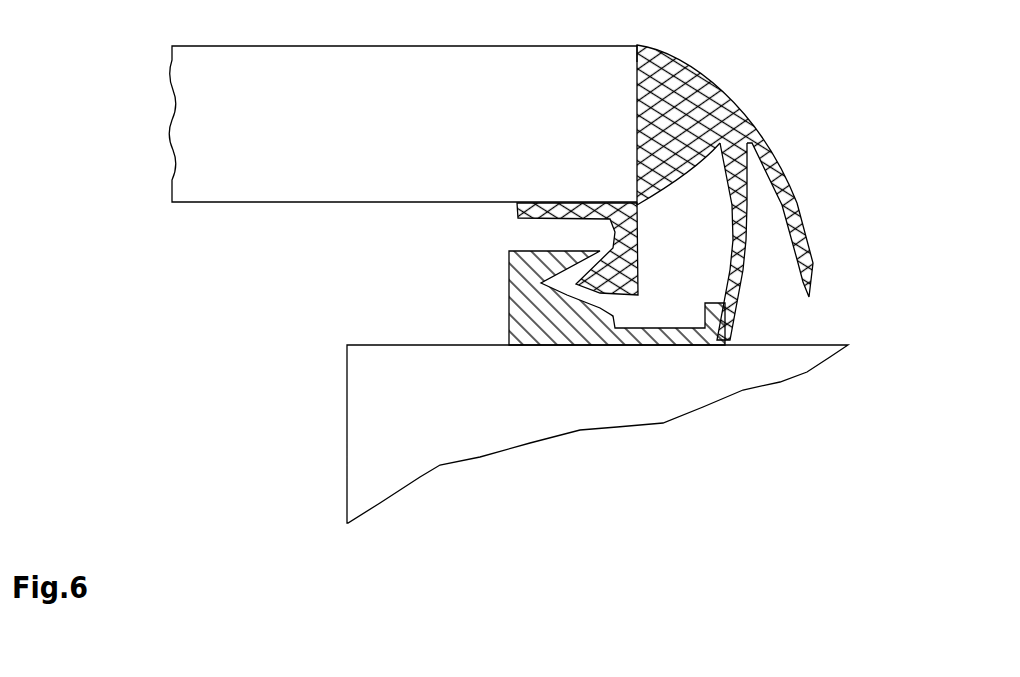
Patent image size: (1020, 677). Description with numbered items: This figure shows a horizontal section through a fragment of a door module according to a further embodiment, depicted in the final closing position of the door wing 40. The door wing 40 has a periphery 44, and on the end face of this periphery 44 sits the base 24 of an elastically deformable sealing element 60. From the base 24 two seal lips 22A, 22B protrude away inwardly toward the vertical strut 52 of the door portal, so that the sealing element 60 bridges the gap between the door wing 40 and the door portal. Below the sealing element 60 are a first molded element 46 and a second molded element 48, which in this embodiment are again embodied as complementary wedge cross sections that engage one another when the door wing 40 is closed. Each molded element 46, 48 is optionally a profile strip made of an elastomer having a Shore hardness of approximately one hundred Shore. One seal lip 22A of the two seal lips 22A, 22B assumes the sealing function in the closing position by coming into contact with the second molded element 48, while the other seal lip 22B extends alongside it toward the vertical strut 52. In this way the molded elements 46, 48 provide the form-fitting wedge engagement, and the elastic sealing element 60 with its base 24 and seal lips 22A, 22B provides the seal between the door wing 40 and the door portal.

The seal lip 22A is at (731, 292).
The seal lip 22B is at (813, 273).
The base 24 is at (687, 88).
The door wing 40 is at (218, 183).
The periphery 44 is at (615, 68).
The first molded element 46 is at (577, 205).
The second molded element 48 is at (523, 315).
The vertical strut 52 is at (617, 415).
The elastically deformable sealing element 60 is at (772, 96).